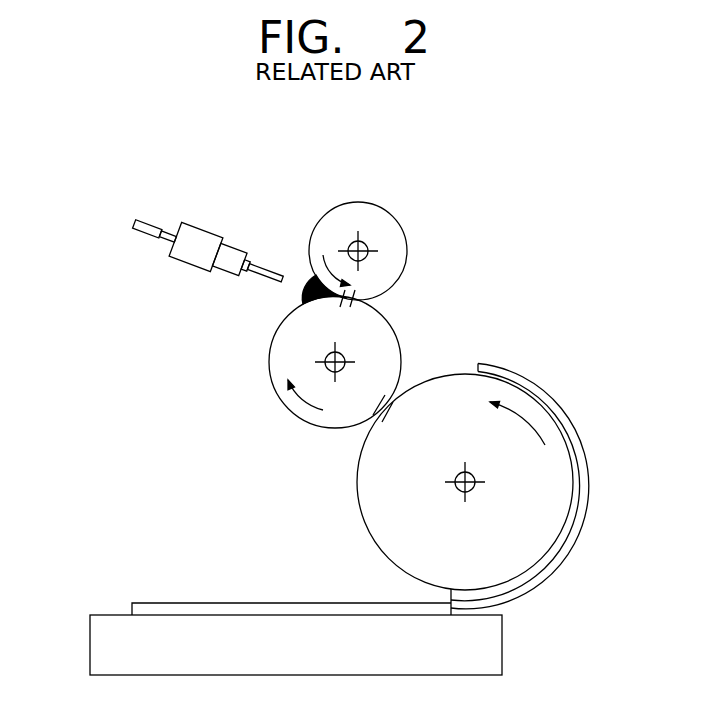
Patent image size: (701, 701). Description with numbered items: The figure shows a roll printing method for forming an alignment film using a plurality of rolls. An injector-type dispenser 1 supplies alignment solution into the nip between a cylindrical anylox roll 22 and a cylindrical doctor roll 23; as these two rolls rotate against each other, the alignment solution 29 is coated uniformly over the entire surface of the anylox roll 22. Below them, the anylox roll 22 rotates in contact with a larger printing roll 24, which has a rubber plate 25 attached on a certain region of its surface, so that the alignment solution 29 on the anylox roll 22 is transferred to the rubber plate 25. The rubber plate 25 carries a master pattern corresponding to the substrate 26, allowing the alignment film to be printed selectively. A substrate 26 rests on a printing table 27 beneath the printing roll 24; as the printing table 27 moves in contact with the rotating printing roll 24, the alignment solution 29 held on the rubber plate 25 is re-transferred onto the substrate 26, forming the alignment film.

The dispenser 1 is at (190, 228).
The anylox roll 22 is at (280, 378).
The doctor roll 23 is at (375, 215).
The printing roll 24 is at (375, 523).
The rubber plate 25 is at (587, 467).
The substrate 26 is at (135, 605).
The printing table 27 is at (100, 639).
The alignment solution 29 is at (305, 279).